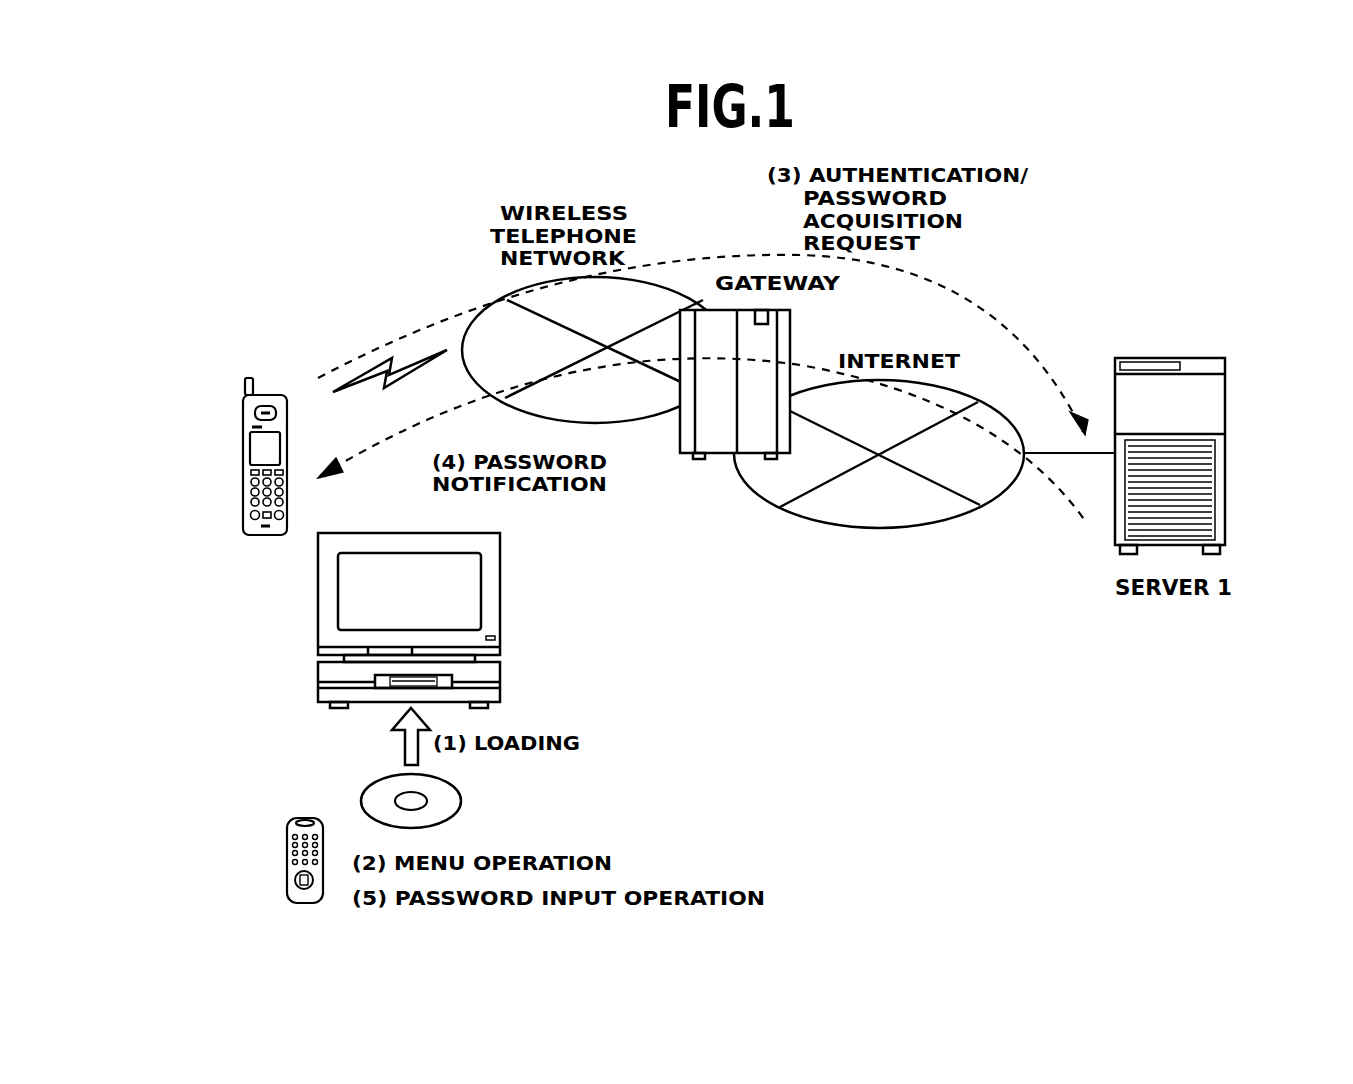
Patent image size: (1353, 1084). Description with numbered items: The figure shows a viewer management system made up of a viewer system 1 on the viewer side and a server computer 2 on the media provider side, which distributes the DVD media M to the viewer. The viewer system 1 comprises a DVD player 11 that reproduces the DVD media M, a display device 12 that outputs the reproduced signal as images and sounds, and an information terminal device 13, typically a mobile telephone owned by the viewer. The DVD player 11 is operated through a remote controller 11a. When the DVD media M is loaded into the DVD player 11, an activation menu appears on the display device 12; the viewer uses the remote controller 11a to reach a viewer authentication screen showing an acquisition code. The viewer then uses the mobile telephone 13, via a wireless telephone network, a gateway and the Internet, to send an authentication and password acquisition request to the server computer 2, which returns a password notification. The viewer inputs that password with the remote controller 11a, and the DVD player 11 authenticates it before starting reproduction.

The viewer system 1 is at (208, 462).
The server computer 2 is at (1185, 358).
The DVD player 11 is at (318, 676).
The remote controller 11a is at (287, 858).
The display device 12 is at (318, 576).
The information terminal device 13 is at (275, 396).
The DVD media M is at (461, 789).